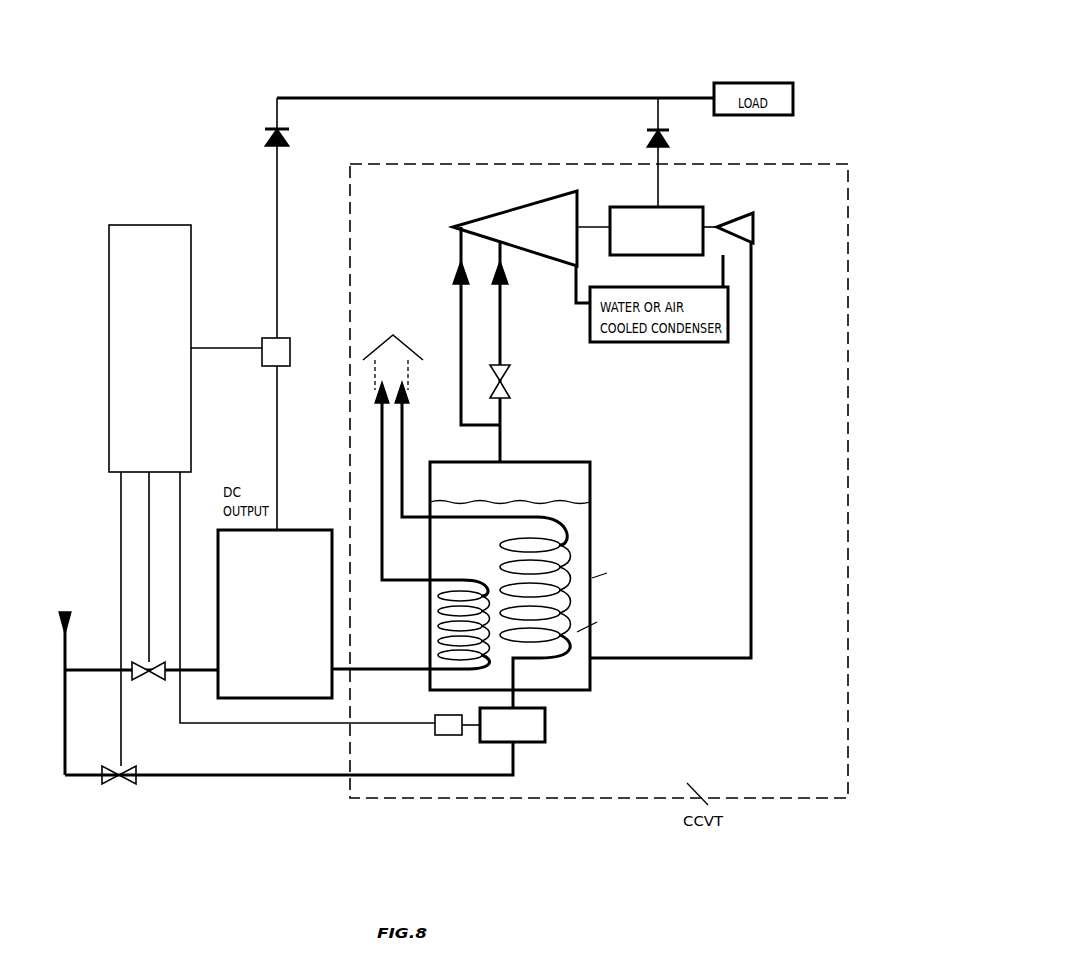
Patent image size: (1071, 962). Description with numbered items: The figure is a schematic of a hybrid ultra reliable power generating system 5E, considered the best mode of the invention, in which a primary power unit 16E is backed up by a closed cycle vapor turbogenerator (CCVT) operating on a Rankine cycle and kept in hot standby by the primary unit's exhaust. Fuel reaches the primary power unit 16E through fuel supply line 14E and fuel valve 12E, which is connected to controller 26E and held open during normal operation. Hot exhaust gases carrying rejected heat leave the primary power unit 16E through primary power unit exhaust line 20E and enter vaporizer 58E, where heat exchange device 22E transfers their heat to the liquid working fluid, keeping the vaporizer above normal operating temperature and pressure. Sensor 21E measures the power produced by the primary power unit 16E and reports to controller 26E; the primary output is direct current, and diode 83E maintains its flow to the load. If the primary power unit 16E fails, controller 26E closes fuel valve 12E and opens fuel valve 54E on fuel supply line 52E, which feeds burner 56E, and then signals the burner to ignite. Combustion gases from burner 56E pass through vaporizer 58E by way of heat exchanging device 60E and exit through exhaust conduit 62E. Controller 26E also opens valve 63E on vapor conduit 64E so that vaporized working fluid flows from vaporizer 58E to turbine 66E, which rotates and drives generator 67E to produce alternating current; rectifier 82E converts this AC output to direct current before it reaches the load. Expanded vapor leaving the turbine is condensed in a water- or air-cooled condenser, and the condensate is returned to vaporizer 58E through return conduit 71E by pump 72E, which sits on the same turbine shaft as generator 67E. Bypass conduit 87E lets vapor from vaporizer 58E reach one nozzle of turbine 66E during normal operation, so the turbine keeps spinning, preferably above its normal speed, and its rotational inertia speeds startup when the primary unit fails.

The hybrid ultra reliable power generating system 5E is at (455, 32).
The diode 83E is at (267, 125).
The rectifier 82E is at (650, 127).
The controller 26E is at (165, 224).
The sensor 21E is at (290, 338).
The primary power unit 16E is at (296, 530).
The fuel supply line 14E is at (67, 652).
The fuel valve 12E is at (141, 683).
The fuel valve 54E is at (113, 787).
The fuel supply line 52E is at (300, 777).
The primary power unit exhaust line 20E is at (350, 675).
The heat exchange device 22E is at (458, 578).
The burner 56E is at (545, 712).
The vaporizer 58E is at (565, 458).
The heat exchanging device 60E is at (533, 512).
The exhaust conduit 62E is at (405, 441).
The valve 63E is at (507, 361).
The vapor conduit 64E is at (502, 312).
The bypass conduit 87E is at (458, 356).
The turbine 66E is at (575, 192).
The generator 67E is at (612, 207).
The pump 72E is at (753, 213).
The return conduit 71E is at (752, 355).